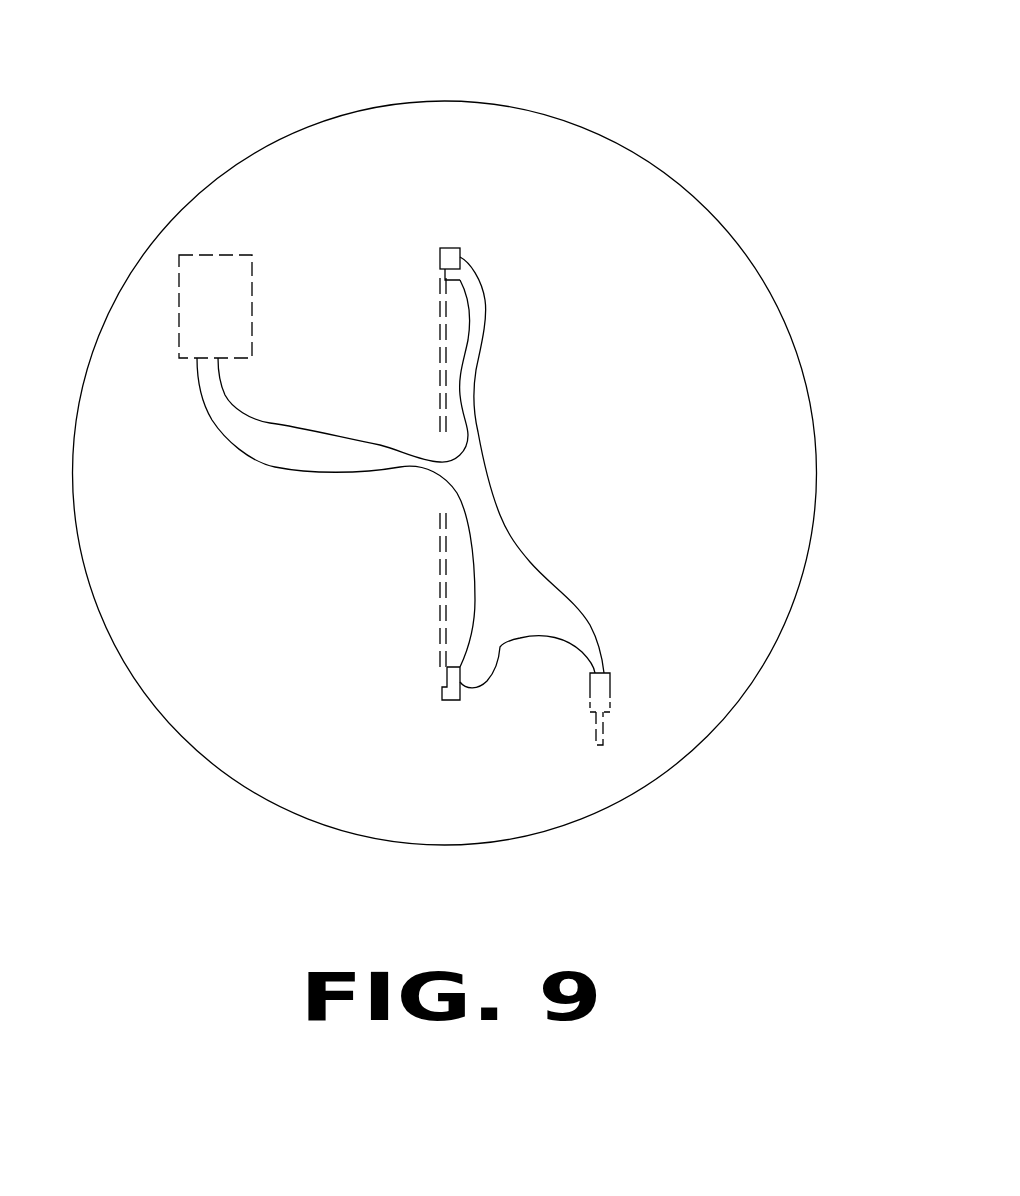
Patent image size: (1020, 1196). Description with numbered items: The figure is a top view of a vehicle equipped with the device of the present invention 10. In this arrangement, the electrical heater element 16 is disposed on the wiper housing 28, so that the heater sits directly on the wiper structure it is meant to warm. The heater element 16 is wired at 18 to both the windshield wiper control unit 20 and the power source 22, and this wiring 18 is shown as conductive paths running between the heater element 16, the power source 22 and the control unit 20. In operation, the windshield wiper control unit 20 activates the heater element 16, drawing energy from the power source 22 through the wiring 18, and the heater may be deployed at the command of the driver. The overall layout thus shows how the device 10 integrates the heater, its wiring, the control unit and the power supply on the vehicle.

The device of the present invention 10 is at (453, 423).
The electrical heater element 16 is at (441, 268).
The wiring 18 is at (467, 510).
The windshield wiper control unit 20 is at (607, 702).
The power source 22 is at (207, 308).
The wiper housing 28 is at (440, 323).